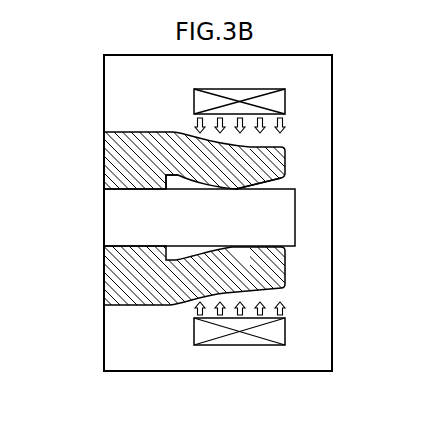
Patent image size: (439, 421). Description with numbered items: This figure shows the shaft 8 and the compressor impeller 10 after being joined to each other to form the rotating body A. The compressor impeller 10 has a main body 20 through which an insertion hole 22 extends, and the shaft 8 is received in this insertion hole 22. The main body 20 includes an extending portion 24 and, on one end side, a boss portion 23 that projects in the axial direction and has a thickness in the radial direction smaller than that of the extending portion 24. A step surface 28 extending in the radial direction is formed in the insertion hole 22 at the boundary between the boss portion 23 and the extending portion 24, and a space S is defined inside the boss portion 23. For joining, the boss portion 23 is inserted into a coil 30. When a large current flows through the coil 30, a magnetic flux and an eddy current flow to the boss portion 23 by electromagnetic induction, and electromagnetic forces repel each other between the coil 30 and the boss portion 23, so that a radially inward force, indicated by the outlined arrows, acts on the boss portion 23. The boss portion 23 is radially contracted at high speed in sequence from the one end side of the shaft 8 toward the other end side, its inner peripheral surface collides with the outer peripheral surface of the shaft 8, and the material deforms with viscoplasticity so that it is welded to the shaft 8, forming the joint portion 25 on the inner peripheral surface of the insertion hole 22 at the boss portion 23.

The rotating body A is at (148, 113).
The shaft 8 is at (118, 206).
The compressor impeller 10 is at (295, 118).
The main body 20 is at (140, 305).
The insertion hole 22 is at (122, 246).
The boss portion 23 is at (255, 146).
The extending portion 24 is at (120, 132).
The joint portion 25 is at (258, 245).
The step surface 28 is at (174, 175).
The coil 30 is at (243, 346).
The space S is at (290, 177).